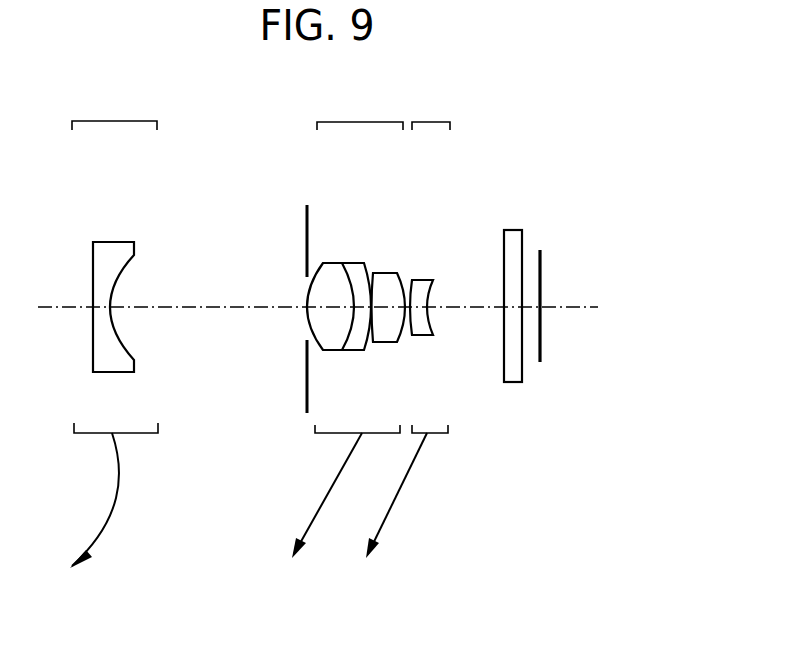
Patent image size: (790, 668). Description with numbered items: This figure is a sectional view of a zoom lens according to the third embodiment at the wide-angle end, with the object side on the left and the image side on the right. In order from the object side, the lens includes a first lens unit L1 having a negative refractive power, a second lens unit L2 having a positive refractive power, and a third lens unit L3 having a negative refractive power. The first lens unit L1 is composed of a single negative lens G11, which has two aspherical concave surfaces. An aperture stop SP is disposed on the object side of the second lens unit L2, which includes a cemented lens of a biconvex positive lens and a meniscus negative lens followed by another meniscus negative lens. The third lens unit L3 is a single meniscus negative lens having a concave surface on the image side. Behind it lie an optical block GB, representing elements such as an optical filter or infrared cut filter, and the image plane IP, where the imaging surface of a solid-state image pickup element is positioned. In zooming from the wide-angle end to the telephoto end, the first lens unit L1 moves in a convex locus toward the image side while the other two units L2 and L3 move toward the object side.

The first lens unit L1 is at (114, 327).
The second lens unit L2 is at (348, 323).
The third lens unit L3 is at (408, 323).
The negative lens G11 is at (117, 244).
The aperture stop SP is at (307, 216).
The optical block GB is at (510, 236).
The image plane IP is at (541, 266).